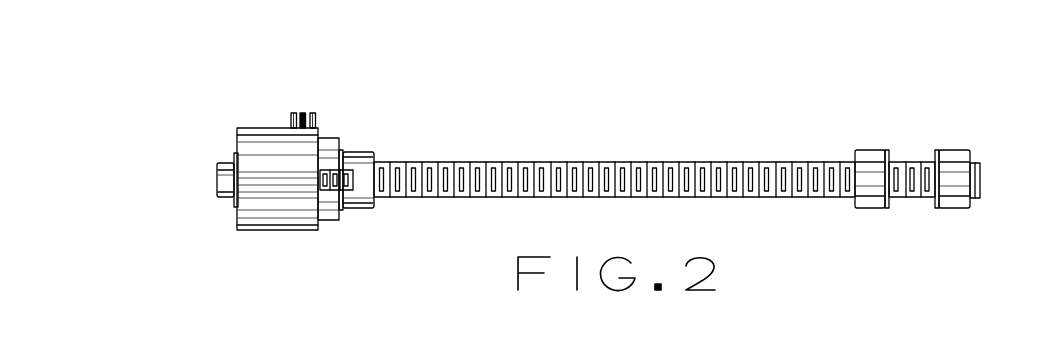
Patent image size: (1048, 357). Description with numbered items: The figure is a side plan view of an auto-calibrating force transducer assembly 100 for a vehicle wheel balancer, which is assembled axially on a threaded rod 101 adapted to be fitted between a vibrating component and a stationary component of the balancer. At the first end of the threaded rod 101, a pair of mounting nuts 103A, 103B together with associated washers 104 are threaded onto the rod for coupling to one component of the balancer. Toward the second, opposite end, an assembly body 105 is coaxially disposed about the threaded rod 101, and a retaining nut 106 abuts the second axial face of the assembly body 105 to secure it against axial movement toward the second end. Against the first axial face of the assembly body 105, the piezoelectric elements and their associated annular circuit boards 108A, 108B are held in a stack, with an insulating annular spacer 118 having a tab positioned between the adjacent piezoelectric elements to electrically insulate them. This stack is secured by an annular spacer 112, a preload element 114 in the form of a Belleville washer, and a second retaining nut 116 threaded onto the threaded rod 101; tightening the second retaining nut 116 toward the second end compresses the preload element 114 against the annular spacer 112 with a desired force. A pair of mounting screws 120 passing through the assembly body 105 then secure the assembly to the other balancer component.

The auto-calibrating force transducer assembly 100 is at (605, 138).
The threaded rod 101 is at (718, 175).
The mounting nut 103A is at (868, 156).
The mounting nut 103B is at (951, 157).
The washer 104 is at (887, 209).
The assembly body 105 is at (270, 207).
The retaining nut 106 is at (234, 153).
The second annular circuit board 108A is at (291, 113).
The first annular circuit board 108B is at (313, 113).
The annular spacer 112 is at (327, 152).
The preload element 114 is at (343, 143).
The second retaining nut 116 is at (363, 187).
The insulating annular spacer 118 is at (302, 113).
The mounting screw 120 is at (217, 178).